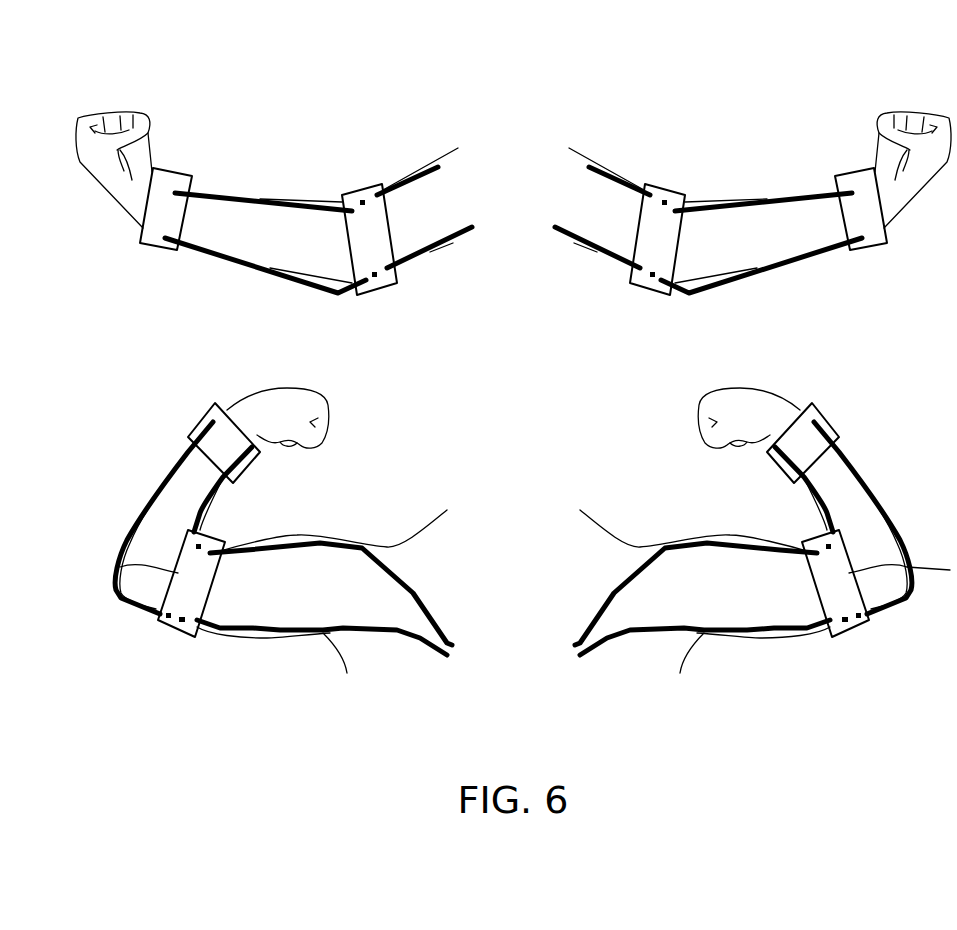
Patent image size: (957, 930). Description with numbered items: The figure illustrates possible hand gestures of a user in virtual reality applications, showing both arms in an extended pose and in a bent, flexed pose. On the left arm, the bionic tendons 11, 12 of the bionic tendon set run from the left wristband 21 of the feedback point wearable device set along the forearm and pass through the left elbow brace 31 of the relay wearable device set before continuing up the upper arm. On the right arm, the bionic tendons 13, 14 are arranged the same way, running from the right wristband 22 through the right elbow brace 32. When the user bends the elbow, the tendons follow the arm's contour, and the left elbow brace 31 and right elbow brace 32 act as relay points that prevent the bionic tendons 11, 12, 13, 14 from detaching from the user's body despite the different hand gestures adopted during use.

The bionic tendon 11 is at (268, 197).
The bionic tendon 12 is at (250, 268).
The bionic tendon 13 is at (762, 198).
The bionic tendon 14 is at (777, 267).
The left wristband 21 is at (173, 168).
The right wristband 22 is at (855, 168).
The left elbow brace 31 is at (362, 190).
The right elbow brace 32 is at (667, 185).